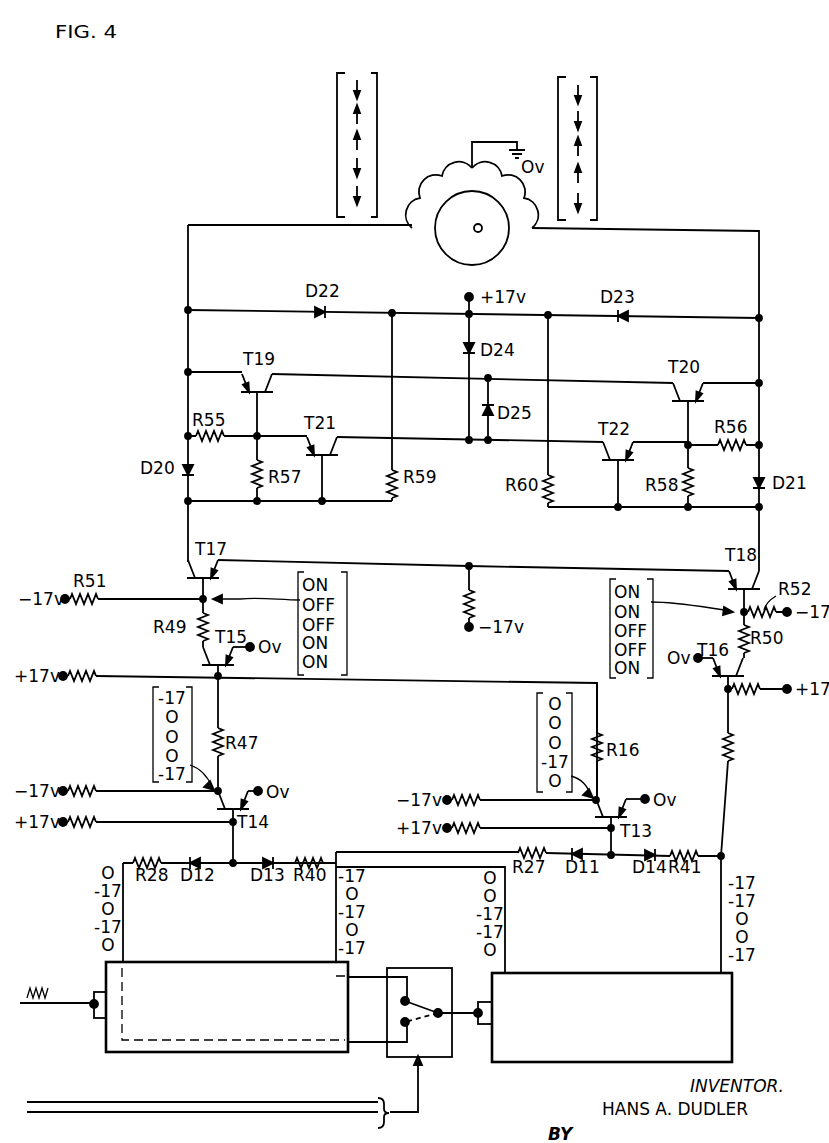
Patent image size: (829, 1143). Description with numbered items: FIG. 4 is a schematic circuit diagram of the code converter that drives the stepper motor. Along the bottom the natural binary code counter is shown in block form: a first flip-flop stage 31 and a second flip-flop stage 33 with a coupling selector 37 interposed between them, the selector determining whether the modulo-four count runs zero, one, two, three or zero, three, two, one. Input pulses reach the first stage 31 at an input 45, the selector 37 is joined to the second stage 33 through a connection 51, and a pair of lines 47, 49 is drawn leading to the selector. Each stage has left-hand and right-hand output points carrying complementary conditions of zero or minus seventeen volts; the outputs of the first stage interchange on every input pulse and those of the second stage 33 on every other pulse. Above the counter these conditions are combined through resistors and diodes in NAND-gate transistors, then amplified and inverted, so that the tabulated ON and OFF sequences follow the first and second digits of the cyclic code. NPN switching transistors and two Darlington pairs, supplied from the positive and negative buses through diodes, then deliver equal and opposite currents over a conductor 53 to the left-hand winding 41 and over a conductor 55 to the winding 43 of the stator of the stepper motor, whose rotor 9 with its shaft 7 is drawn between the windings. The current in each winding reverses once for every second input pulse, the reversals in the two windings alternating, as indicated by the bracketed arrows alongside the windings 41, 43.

The shaft 7 is at (473, 228).
The rotor 9 is at (499, 255).
The left-hand winding 41 is at (423, 196).
The winding 43 is at (527, 206).
The conductor 53 is at (188, 288).
The conductor 55 is at (759, 297).
The first flip-flop stage 31 is at (238, 962).
The second flip-flop stage 33 is at (634, 973).
The coupling selector 37 is at (432, 968).
The input pulse line 45 is at (77, 1010).
The control line 47 is at (170, 1102).
The control line 49 is at (120, 1113).
The switch output connection 51 is at (458, 1018).